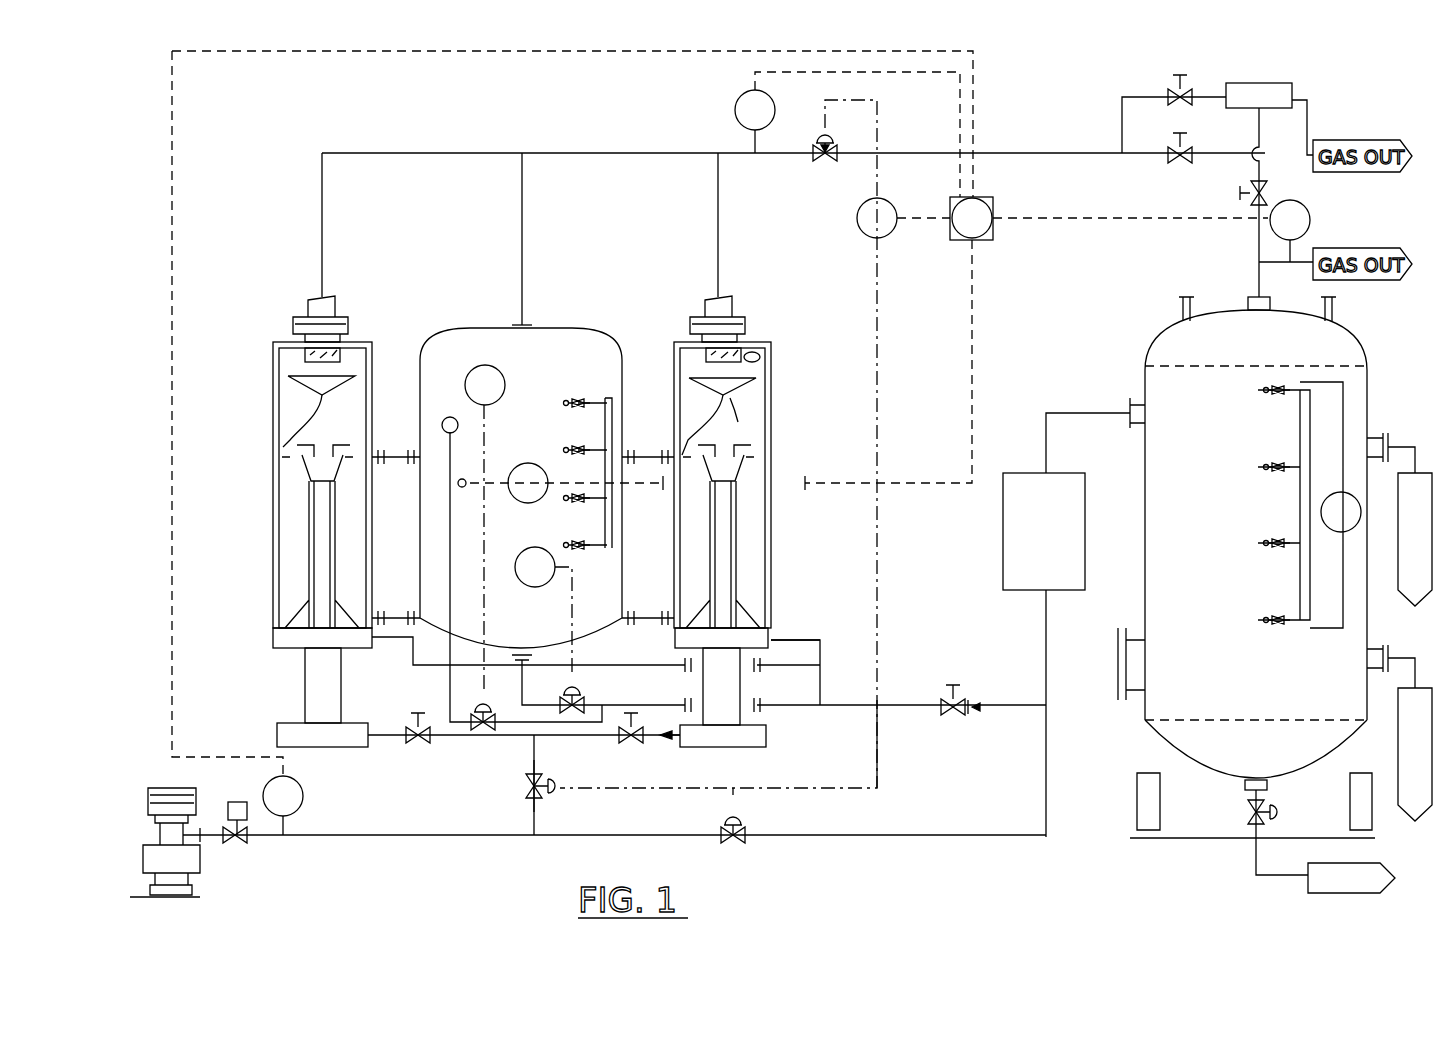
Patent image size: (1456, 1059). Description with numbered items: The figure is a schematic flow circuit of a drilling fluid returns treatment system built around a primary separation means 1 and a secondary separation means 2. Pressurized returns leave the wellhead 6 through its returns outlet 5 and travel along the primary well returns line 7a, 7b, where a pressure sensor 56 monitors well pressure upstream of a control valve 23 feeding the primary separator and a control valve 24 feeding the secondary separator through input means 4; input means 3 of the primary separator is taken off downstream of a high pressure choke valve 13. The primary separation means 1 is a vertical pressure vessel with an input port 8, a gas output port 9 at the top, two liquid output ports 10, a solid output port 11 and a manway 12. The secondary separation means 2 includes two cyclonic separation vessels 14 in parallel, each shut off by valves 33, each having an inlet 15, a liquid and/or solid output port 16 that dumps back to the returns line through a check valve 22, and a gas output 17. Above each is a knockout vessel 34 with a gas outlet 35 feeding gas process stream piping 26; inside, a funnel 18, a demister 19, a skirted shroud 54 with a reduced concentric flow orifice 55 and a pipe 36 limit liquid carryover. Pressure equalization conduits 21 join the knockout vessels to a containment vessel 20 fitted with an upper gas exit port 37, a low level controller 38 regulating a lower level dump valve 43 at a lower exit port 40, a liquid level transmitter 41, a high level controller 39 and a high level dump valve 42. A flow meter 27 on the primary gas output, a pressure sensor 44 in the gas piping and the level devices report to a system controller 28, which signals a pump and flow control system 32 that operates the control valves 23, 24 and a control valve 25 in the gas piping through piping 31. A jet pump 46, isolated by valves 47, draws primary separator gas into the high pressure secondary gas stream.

The primary separation means 1 is at (1203, 563).
The secondary separation means 2 is at (598, 284).
The input means 3 is at (1100, 412).
The input means 4 is at (530, 810).
The returns outlet 5 is at (205, 840).
The wellhead 6 is at (160, 785).
The primary well returns line 7a is at (425, 842).
The primary well returns line 7b is at (905, 848).
The input port 8 is at (1135, 398).
The gas output port 9 is at (1248, 298).
The liquid output ports 10 is at (1388, 433).
The solid output port 11 is at (1245, 786).
The manway 12 is at (1118, 665).
The high pressure choke valve 13 is at (1058, 563).
The separation vessel 14 is at (335, 703).
The inlet 15 is at (665, 742).
The liquid and/or solid output port 16 is at (772, 638).
The gas output 17 is at (715, 610).
The funnel 18 is at (760, 396).
The demister 19 is at (760, 358).
The containment vessel 20 is at (548, 425).
The pressure equalization conduits 21 is at (650, 455).
The check valve 22 is at (970, 722).
The control valve 23 is at (740, 845).
The control valve 24 is at (540, 798).
The control valve 25 is at (820, 163).
The gas process stream piping 26 is at (586, 151).
The flow meter 27 is at (1302, 224).
The system controller 28 is at (968, 255).
The piping 31 is at (875, 298).
The pump and flow control system 32 is at (866, 228).
The valves 33 is at (418, 745).
The knockout vessel 34 is at (272, 485).
The gas outlet 35 is at (296, 318).
The pipe 36 is at (755, 430).
The upper gas exit port 37 is at (515, 323).
The low level controller 38 is at (527, 578).
The high level controller 39 is at (493, 378).
The lower exit port 40 is at (535, 660).
The liquid level transmitter 41 is at (520, 492).
The high level dump valve 42 is at (480, 732).
The lower level dump valve 43 is at (585, 700).
The pressure sensor 44 is at (735, 110).
The jet pump 46 is at (1280, 98).
The valves 47 is at (1190, 90).
The skirted shroud 54 is at (283, 447).
The concentric flow orifice 55 is at (338, 442).
The pressure sensor 56 is at (297, 803).